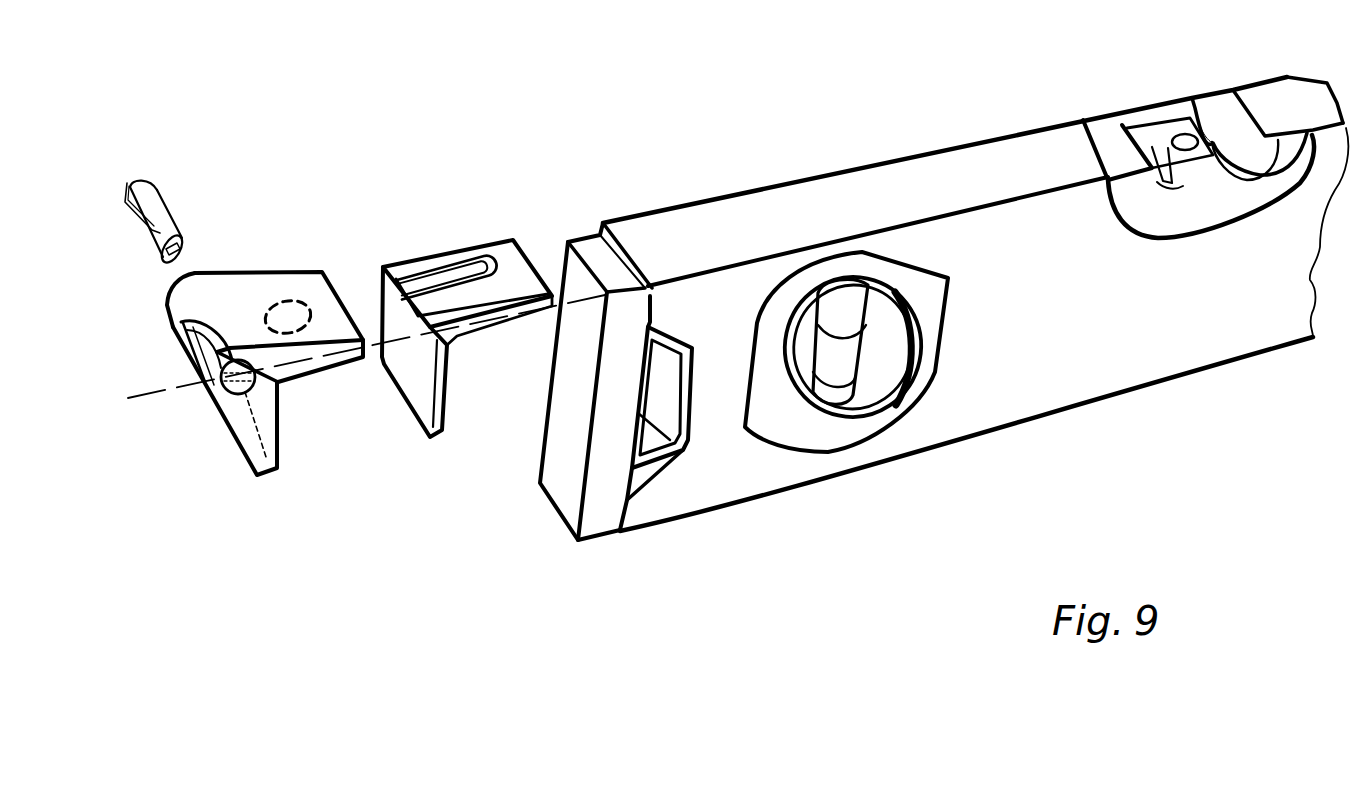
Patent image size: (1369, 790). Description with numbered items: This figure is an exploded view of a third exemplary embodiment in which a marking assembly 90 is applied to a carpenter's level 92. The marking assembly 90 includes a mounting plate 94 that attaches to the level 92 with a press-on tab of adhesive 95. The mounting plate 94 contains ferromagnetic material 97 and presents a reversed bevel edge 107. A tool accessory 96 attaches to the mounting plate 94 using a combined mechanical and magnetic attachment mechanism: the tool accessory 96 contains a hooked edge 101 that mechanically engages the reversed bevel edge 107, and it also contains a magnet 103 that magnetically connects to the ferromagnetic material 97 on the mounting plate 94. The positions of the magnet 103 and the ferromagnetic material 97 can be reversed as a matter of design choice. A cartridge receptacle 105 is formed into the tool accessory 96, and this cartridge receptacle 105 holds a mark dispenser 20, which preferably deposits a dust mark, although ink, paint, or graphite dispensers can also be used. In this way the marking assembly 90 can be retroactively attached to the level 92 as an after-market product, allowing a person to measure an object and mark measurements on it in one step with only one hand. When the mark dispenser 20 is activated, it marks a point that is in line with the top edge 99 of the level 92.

The mark dispenser 20 is at (152, 235).
The marking assembly 90 is at (318, 326).
The carpenter's level 92 is at (944, 308).
The mounting plate 94 is at (478, 310).
The press-on tab of adhesive 95 is at (528, 320).
The tool accessory 96 is at (297, 358).
The ferromagnetic material 97 is at (500, 268).
The top edge 99 is at (868, 208).
The hooked edge 101 is at (257, 433).
The magnet 103 is at (293, 308).
The cartridge receptacle 105 is at (238, 388).
The reversed bevel edge 107 is at (469, 346).